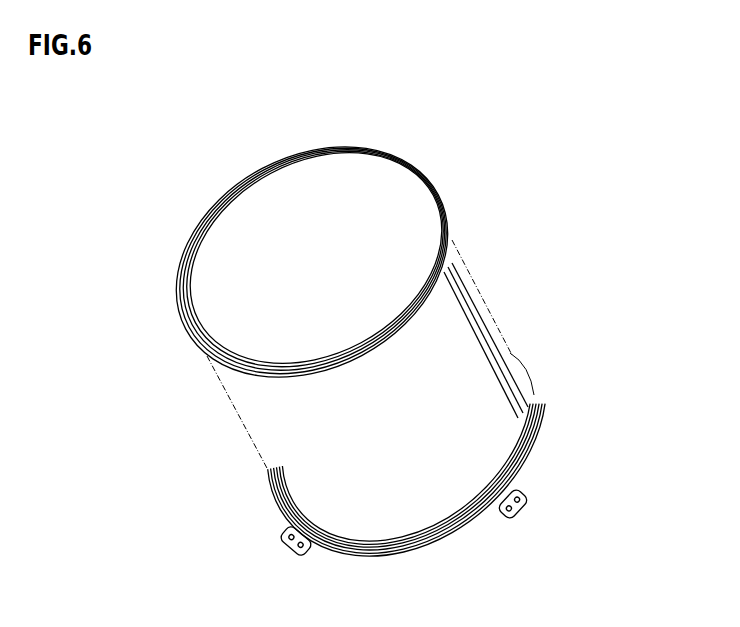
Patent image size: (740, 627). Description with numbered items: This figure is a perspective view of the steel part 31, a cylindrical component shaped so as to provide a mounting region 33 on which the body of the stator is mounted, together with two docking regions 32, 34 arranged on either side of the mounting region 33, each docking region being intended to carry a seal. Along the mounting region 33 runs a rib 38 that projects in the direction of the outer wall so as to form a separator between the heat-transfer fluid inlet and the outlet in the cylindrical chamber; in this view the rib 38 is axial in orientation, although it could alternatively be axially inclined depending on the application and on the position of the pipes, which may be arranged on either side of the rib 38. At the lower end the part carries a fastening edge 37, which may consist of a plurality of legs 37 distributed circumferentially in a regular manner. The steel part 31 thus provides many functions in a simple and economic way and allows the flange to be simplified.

The steel part 31 is at (376, 362).
The docking region 32 is at (538, 455).
The mounting region 33 is at (260, 460).
The docking region 34 is at (427, 173).
The fastening edge 37 is at (294, 552).
The rib 38 is at (487, 327).